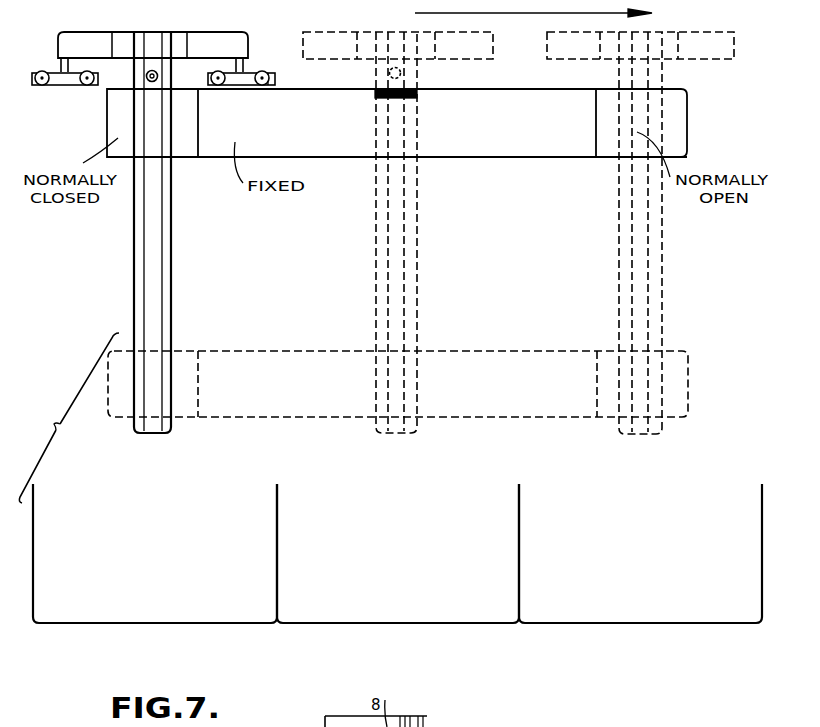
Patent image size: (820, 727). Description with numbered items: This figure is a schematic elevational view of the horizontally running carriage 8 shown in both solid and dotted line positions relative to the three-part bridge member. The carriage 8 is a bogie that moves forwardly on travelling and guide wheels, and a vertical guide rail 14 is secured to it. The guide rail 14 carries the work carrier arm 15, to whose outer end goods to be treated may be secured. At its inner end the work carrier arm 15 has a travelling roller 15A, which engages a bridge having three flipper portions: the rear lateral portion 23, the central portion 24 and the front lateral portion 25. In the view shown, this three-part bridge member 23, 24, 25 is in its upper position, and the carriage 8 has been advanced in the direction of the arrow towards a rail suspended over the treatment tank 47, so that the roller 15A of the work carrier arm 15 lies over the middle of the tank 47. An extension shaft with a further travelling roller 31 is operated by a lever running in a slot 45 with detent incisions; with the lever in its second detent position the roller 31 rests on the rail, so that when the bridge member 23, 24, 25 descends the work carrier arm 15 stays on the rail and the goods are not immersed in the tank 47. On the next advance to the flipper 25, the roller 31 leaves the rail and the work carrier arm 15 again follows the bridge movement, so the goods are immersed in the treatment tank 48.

The carriage 8 is at (76, 43).
The work carrier arm 15 is at (155, 72).
The vertical guide rail 14 is at (167, 273).
The rear lateral portion 23 is at (118, 113).
The central portion 24 is at (496, 142).
The front lateral portion 25 is at (672, 117).
The treatment tank 47 is at (480, 616).
The treatment tank 48 is at (736, 612).
The travelling roller 31 is at (365, 726).
The travelling roller 15A is at (433, 726).
The slot 45 is at (493, 720).